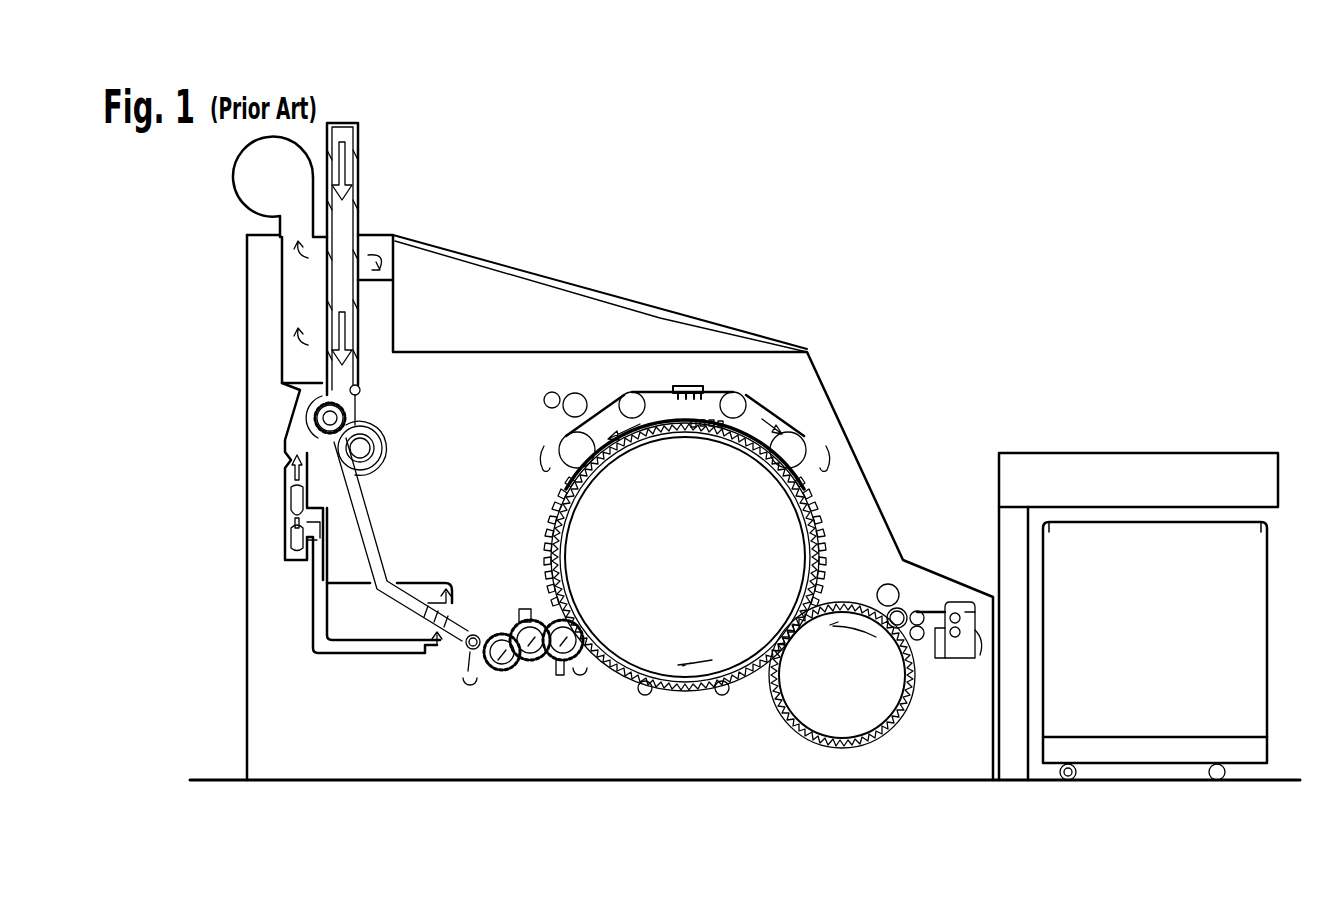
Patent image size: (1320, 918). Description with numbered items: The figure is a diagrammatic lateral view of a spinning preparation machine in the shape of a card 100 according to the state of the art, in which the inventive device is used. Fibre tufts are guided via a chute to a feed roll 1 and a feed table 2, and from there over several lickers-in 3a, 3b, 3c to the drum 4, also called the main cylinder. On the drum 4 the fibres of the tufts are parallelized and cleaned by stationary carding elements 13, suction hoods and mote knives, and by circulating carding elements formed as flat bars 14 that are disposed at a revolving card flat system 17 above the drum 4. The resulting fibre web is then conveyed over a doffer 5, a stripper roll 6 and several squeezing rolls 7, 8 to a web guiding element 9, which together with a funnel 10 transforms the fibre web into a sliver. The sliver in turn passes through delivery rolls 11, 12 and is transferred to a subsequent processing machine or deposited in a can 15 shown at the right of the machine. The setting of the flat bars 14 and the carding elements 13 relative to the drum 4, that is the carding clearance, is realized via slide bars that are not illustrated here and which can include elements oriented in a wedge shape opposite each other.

The card 100 is at (965, 223).
The feed roll 1 is at (465, 647).
The feed table 2 is at (485, 633).
The licker-in 3a is at (507, 660).
The licker-in 3b is at (512, 623).
The licker-in 3c is at (553, 645).
The drum 4 is at (652, 634).
The doffer 5 is at (810, 705).
The stripper roll 6 is at (889, 636).
The squeezing roll 7 is at (921, 606).
The squeezing roll 8 is at (914, 642).
The web guiding element 9 is at (938, 642).
The funnel 10 is at (947, 605).
The delivery roll 11 is at (960, 627).
The delivery roll 12 is at (974, 630).
The stationary carding elements 13 is at (540, 542).
The flat bars 14 is at (692, 388).
The can 15 is at (1137, 695).
The revolving card flat system 17 is at (787, 398).